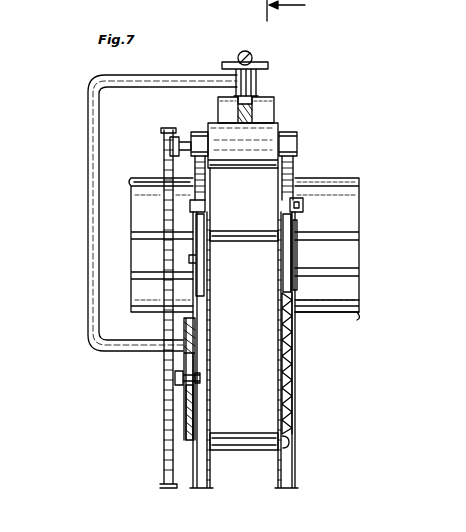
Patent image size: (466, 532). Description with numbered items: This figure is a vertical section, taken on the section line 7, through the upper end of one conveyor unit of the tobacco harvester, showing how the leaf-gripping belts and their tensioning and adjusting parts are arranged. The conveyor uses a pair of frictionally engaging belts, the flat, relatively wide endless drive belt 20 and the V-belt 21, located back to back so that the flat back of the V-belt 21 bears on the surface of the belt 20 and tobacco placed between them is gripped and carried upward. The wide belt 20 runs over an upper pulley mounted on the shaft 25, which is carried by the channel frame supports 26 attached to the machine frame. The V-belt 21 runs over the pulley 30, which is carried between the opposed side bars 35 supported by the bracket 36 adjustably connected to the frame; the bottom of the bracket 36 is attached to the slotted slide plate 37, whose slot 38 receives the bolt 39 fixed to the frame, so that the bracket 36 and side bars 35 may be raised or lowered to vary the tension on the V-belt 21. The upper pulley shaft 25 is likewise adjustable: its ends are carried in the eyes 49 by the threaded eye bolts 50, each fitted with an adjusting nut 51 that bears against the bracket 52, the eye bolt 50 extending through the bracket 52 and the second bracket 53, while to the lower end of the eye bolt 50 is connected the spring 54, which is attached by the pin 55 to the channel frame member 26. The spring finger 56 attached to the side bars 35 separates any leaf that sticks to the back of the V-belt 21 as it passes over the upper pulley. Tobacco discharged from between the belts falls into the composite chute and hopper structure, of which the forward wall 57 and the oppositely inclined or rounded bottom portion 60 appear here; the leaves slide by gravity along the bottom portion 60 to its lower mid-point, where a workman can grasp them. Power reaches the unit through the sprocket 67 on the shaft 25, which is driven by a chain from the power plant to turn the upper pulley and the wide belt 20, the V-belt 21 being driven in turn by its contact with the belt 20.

The section line 7 is at (291, 11).
The conveyor belt 20 is at (278, 128).
The V-belt 21 is at (253, 60).
The shaft 25 is at (191, 140).
The channel frame support 26 is at (195, 462).
The pulley 30 is at (259, 88).
The side bars 35 is at (258, 78).
The bracket 36 is at (139, 213).
The slotted slide plate 37 is at (185, 360).
The slot 38 is at (186, 402).
The bolt 39 is at (201, 381).
The eyes 49 is at (297, 140).
The threaded eye bolt 50 is at (209, 196).
The adjusting nut 51 is at (304, 208).
The bracket 52 is at (300, 228).
The second bracket 53 is at (296, 265).
The spring 54 is at (293, 352).
The pin 55 is at (290, 446).
The spring finger 56 is at (274, 111).
The forward wall 57 is at (359, 215).
The bottom portion 60 is at (359, 312).
The sprocket 67 is at (169, 147).